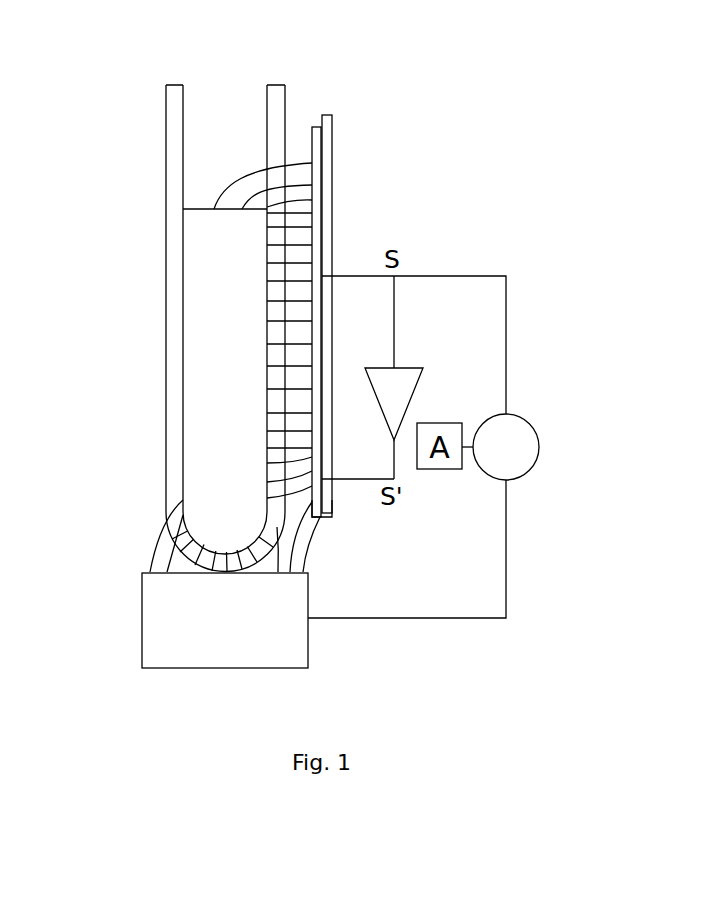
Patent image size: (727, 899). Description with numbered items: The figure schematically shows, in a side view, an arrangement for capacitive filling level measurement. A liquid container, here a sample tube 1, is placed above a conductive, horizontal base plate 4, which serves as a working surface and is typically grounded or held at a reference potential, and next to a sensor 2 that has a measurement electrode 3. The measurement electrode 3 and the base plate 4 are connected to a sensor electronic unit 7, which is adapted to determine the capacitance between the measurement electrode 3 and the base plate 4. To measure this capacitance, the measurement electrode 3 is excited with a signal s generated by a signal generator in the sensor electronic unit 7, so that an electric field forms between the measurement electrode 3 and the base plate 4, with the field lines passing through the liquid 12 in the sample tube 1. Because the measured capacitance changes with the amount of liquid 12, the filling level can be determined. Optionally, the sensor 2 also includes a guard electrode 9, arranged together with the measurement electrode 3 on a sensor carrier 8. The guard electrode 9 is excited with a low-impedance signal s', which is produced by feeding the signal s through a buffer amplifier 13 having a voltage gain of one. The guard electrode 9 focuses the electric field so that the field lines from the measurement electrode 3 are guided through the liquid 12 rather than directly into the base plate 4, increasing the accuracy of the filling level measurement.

The sample tube 1 is at (158, 132).
The sensor 2 is at (345, 110).
The measurement electrode 3 is at (318, 127).
The base plate 4 is at (137, 613).
The sensor electronic unit 7 is at (543, 430).
The sensor carrier 8 is at (335, 190).
The guard electrode 9 is at (317, 518).
The liquid 12 is at (190, 337).
The buffer amplifier 13 is at (412, 362).